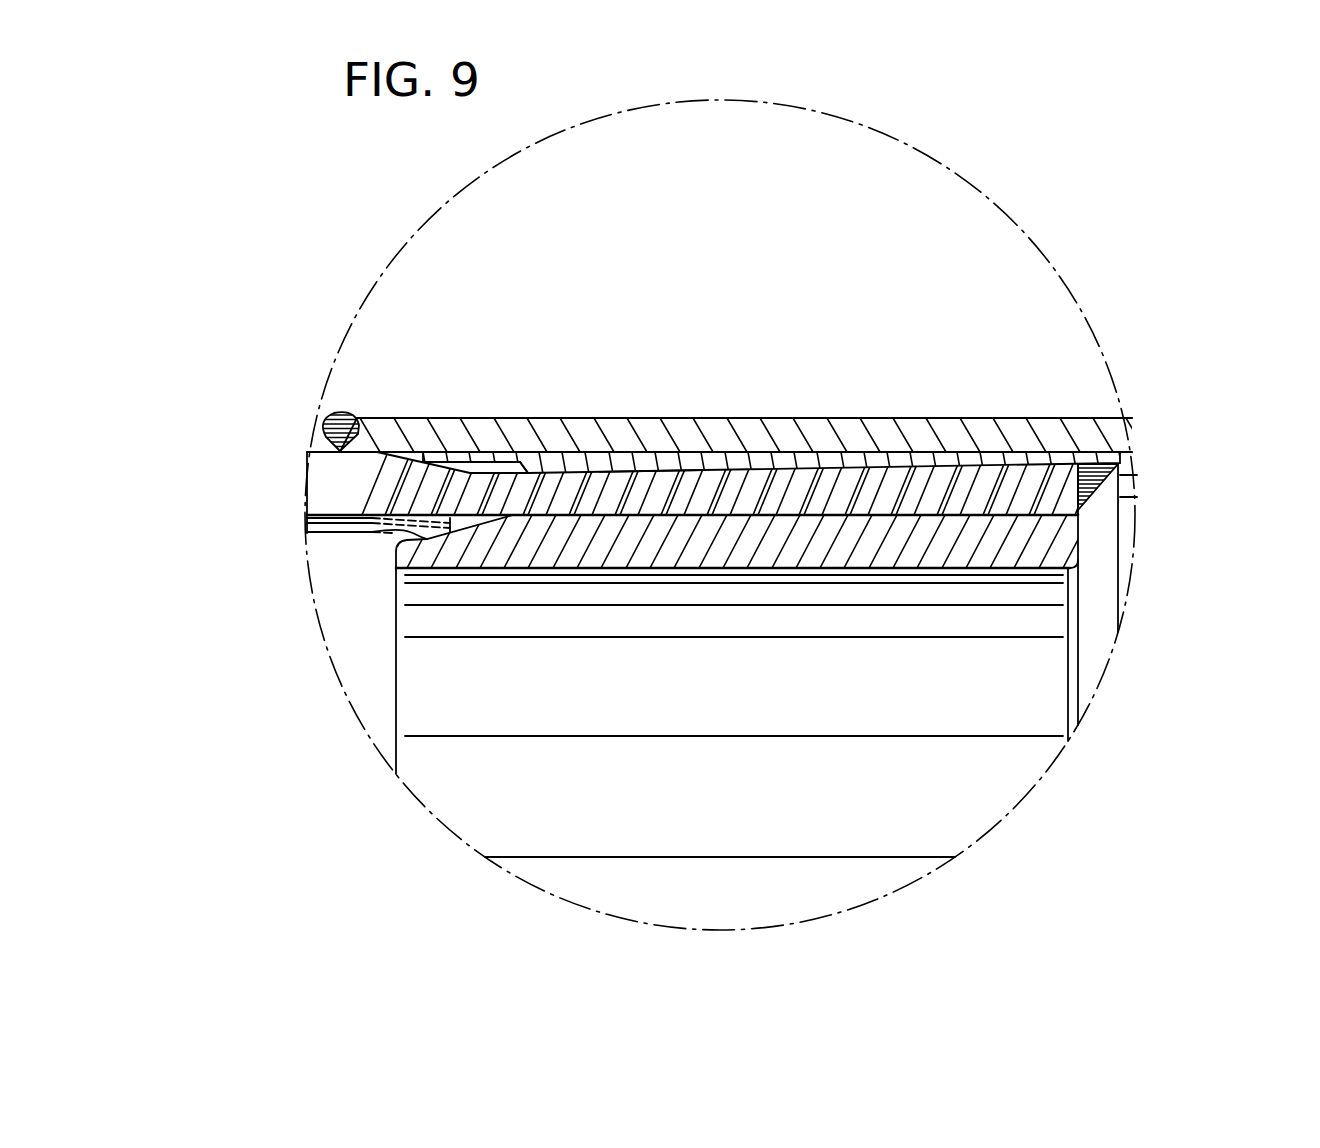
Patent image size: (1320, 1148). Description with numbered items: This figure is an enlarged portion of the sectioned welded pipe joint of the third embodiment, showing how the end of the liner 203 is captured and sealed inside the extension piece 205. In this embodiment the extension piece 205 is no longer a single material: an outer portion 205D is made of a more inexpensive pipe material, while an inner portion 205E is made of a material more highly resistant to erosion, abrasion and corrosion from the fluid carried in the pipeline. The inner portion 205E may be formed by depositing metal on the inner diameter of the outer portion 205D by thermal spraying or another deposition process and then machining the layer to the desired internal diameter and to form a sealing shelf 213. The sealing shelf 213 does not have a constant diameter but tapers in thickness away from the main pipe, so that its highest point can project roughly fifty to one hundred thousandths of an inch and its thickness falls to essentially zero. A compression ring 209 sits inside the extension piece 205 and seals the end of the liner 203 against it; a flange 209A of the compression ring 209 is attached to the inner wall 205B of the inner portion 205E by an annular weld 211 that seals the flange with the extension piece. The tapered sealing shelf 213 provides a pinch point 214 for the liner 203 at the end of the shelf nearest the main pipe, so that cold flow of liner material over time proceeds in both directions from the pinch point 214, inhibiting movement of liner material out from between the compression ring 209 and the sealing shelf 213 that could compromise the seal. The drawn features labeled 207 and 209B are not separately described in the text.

The liner 203 is at (285, 478).
The extension piece 205 is at (1016, 408).
The inner wall 205B is at (1122, 475).
The outer portion 205D is at (895, 435).
The inner portion 205E is at (1108, 452).
The bead 207 is at (347, 413).
The compression ring 209 is at (375, 641).
The flange 209A is at (1052, 496).
The body web portion 209B is at (405, 533).
The annular weld 211 is at (1093, 647).
The sealing shelf 213 is at (650, 466).
The pinch point 214 is at (518, 475).